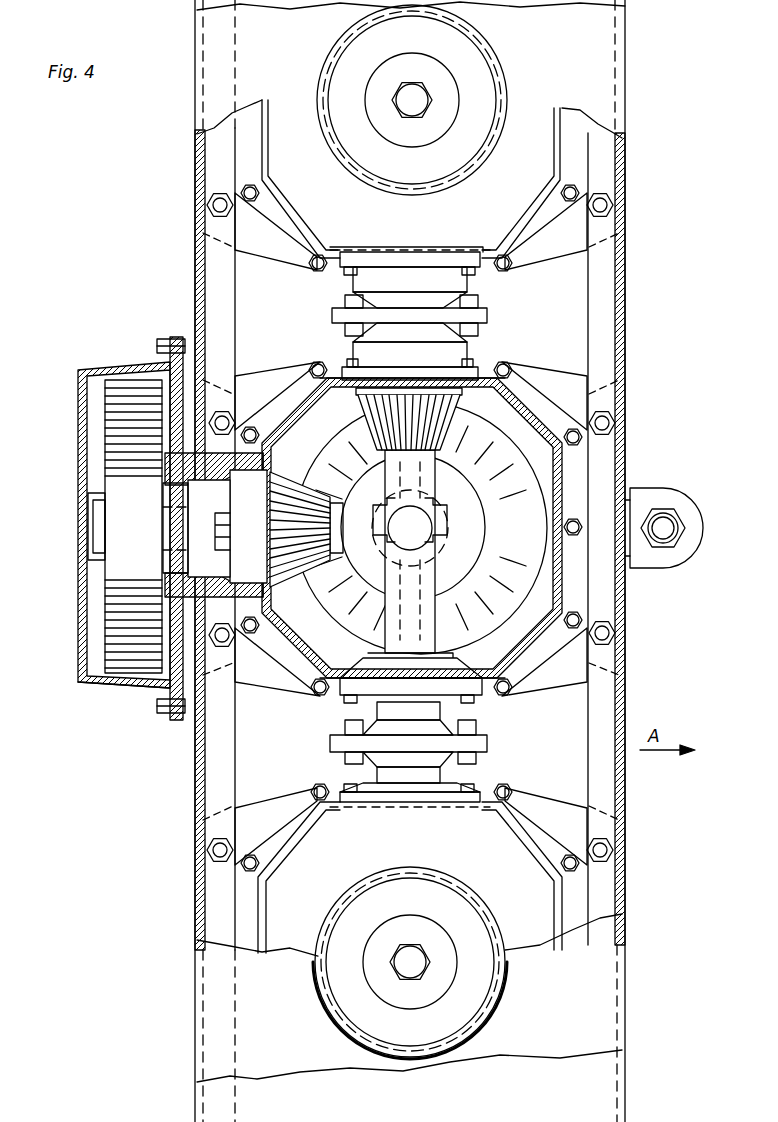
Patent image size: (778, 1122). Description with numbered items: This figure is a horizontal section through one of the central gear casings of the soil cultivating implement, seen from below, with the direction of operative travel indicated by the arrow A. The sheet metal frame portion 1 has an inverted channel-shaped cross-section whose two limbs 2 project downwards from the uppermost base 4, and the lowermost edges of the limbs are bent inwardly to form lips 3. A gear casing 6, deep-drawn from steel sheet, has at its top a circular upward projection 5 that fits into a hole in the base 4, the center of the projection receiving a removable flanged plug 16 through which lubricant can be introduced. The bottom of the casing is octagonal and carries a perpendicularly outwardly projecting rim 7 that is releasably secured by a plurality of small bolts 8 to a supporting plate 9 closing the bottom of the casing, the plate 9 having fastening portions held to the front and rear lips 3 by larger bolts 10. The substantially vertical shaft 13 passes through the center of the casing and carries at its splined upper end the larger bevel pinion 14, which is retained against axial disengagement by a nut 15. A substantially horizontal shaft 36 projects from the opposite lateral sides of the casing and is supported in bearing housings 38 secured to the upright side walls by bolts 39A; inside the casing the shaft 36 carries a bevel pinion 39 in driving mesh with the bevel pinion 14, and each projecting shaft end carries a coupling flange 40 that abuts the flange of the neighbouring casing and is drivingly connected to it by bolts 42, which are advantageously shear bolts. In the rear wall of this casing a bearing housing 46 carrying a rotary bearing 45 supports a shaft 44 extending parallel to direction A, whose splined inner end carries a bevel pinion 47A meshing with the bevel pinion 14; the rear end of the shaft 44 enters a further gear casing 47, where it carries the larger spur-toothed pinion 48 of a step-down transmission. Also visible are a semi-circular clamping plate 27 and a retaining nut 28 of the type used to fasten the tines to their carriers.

The frame portion 1 is at (630, 62).
The limbs 2 is at (197, 262).
The lips 3 is at (236, 300).
The uppermost base 4 is at (282, 95).
The upward projection 5 is at (355, 150).
The gear casing 6 is at (455, 223).
The rim 7 is at (523, 372).
The small bolts 8 is at (262, 222).
The supporting plate 9 is at (268, 258).
The larger bolts 10 is at (207, 205).
The shaft 13 is at (428, 560).
The bevel pinion 14 is at (520, 590).
The nut 15 is at (432, 536).
The flanged plug 16 is at (438, 78).
The clamping plates 27 is at (660, 488).
The retaining nut 28 is at (666, 560).
The shaft 36 is at (436, 490).
The bearing housing 38 is at (390, 258).
The bevel pinion 39 is at (460, 440).
The bolts 39A is at (350, 264).
The coupling flange 40 is at (488, 310).
The bolts 42 is at (334, 302).
The shaft 44 is at (212, 556).
The rotary bearing 45 is at (296, 572).
The bearing housing 46 is at (268, 458).
The further gear casing 47 is at (130, 362).
The bevel pinion 47A is at (318, 486).
The pinion 48 is at (124, 685).